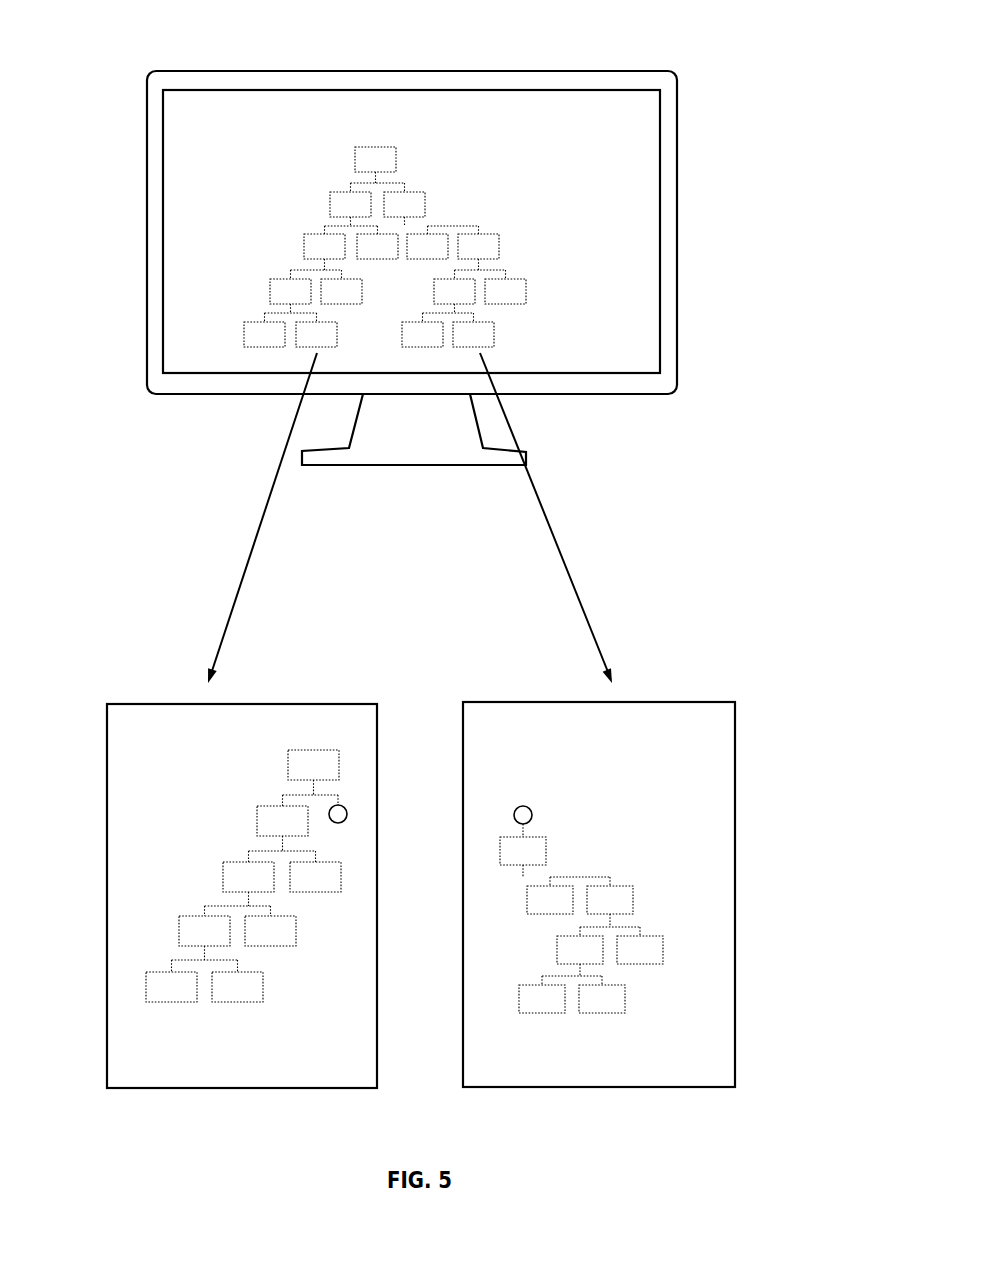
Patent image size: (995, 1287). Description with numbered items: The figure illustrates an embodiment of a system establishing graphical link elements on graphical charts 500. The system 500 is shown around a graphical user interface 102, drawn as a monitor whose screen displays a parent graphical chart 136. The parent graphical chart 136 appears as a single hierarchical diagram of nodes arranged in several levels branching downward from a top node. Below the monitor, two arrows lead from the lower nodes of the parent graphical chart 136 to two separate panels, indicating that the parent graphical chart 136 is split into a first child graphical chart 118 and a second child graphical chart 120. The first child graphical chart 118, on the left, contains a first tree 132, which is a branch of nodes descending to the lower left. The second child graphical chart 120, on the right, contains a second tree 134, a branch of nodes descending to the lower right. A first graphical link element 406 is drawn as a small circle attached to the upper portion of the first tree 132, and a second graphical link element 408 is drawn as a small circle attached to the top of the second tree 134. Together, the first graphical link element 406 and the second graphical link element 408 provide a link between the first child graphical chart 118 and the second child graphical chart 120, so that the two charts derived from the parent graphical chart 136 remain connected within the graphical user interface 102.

The system establishing graphical link elements on graphical charts 500 is at (780, 50).
The graphical user interface 102 is at (553, 56).
The parent graphical chart 136 is at (531, 130).
The first child graphical chart 118 is at (392, 1129).
The second child graphical chart 120 is at (763, 1130).
The first tree 132 is at (310, 1048).
The second tree 134 is at (656, 1058).
The first graphical link element 406 is at (346, 822).
The second graphical link element 408 is at (514, 814).